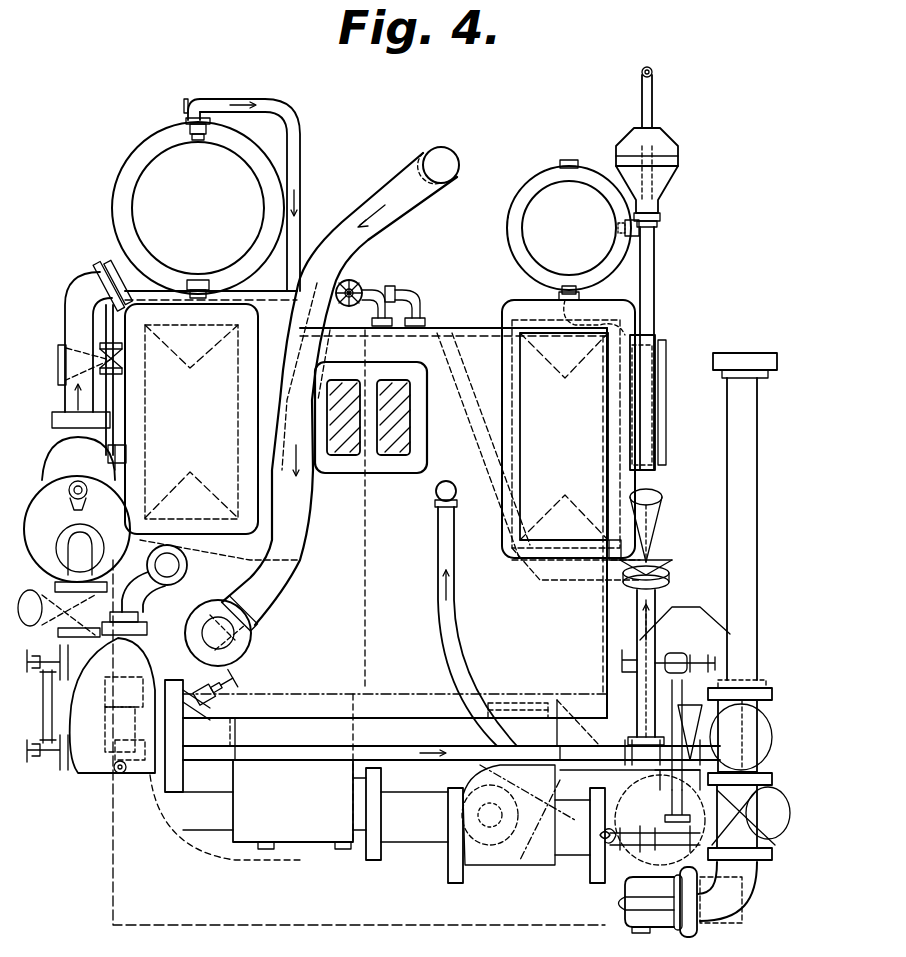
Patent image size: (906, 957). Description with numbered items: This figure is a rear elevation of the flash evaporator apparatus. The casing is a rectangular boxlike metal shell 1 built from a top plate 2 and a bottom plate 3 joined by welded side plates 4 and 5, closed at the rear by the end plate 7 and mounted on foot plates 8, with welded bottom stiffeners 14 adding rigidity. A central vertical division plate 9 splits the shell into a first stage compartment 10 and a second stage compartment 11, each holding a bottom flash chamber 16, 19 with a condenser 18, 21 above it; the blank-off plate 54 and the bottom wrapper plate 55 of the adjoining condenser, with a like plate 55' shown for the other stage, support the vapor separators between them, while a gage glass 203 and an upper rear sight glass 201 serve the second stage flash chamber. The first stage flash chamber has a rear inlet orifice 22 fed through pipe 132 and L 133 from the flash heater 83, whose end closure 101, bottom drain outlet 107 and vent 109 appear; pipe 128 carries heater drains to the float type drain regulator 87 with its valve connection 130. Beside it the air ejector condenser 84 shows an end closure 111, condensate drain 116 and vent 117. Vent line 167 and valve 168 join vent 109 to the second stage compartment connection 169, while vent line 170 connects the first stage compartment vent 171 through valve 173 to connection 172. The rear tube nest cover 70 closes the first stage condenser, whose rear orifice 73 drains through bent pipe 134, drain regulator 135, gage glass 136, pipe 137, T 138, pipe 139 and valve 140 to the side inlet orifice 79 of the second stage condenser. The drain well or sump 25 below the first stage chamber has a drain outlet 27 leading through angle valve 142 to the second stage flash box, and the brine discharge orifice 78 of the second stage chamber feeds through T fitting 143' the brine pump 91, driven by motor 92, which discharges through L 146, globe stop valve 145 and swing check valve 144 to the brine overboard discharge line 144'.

The metal shell 1 is at (395, 700).
The top plate 2 is at (462, 338).
The bottom plate 3 is at (322, 700).
The side plate 4 is at (117, 546).
The side plate 5 is at (600, 440).
The end plate 7 is at (272, 700).
The foot plates 8 is at (578, 723).
The central vertical division plate 9 is at (370, 650).
The first stage compartment 10 is at (265, 350).
The second stage compartment 11 is at (600, 440).
The bottom stiffener 14 is at (340, 700).
The first stage flash chamber 16 is at (240, 588).
The first stage condenser 18 is at (265, 475).
The second stage flash chamber 19 is at (442, 700).
The second stage condenser 21 is at (595, 410).
The rear inlet orifice 22 is at (252, 648).
The drain well or sump 25 is at (252, 843).
The drain outlet 27 is at (408, 843).
The blank-off plate 54 is at (262, 448).
The bottom wrapper plate 55 is at (220, 552).
The partition 55' is at (576, 575).
The rear tube nest cover 70 is at (78, 446).
The rear orifice 73 is at (178, 575).
The bottom outlet orifice 78 is at (530, 710).
The inlet orifice 79 is at (612, 565).
The flash heater 83 is at (150, 175).
The air ejector condenser 84 is at (530, 232).
The float type drain regulator 87 is at (120, 478).
The brine pump 91 is at (672, 920).
The motor 92 is at (750, 650).
The end closure 101 is at (140, 208).
The bottom drain outlet 107 is at (135, 278).
The vent 109 is at (195, 136).
The end closure 111 is at (530, 262).
The condensate drain 116 is at (570, 345).
The vent 117 is at (625, 228).
The pipe 128 is at (68, 300).
The valve connection 130 is at (78, 560).
The pipe 132 is at (320, 540).
The L 133 is at (255, 622).
The bent pipe 134 is at (135, 596).
The drain regulator 135 is at (100, 765).
The gage glass 136 is at (50, 762).
The pipe 137 is at (340, 762).
The T 138 is at (527, 812).
The pipe 139 is at (648, 648).
The valve 140 is at (655, 566).
The angle valve 142 is at (515, 840).
The T fitting 143' is at (578, 855).
The swing check valve 144 is at (760, 779).
The brine overboard discharge line 144' is at (672, 314).
The globe stop valve 145 is at (745, 862).
The L 146 is at (735, 900).
The vent line 167 is at (300, 155).
The valve 168 is at (358, 285).
The second stage compartment connection 169 is at (378, 314).
The vent line 170 is at (116, 405).
The first stage compartment vent 171 is at (128, 452).
The second stage compartment connection 172 is at (372, 510).
The valve 173 is at (125, 360).
The rear sight glass 201 is at (350, 450).
The gage glass 203 is at (690, 700).